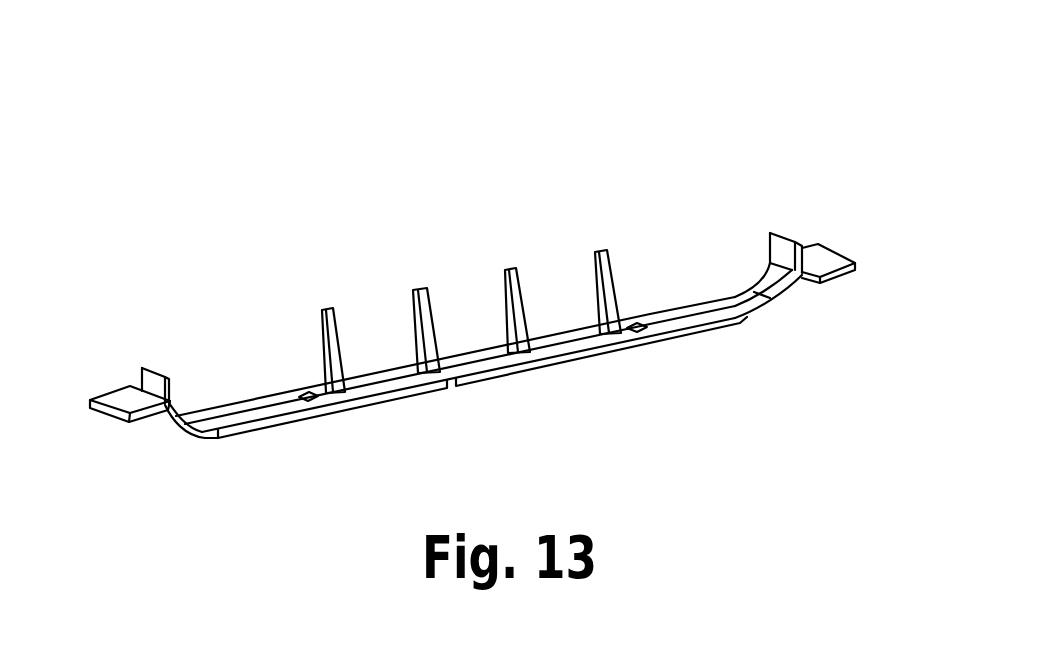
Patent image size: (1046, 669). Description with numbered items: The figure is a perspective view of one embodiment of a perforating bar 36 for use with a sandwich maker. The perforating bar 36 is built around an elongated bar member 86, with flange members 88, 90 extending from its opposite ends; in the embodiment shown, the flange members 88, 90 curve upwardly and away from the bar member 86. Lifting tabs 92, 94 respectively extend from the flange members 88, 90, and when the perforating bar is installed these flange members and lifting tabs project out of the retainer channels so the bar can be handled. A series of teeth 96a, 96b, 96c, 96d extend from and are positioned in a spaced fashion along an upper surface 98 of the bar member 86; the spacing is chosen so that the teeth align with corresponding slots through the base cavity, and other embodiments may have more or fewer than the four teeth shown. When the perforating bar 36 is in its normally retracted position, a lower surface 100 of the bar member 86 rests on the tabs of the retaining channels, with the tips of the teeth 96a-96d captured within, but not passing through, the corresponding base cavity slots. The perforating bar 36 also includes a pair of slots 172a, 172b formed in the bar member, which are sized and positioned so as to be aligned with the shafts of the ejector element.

The perforating bar 36 is at (695, 102).
The bar member 86 is at (420, 395).
The flange member 88 is at (195, 438).
The flange member 90 is at (796, 302).
The lifting tab 92 is at (118, 397).
The lifting tab 94 is at (826, 252).
The tooth 96a is at (325, 310).
The tooth 96b is at (418, 289).
The tooth 96c is at (508, 269).
The tooth 96d is at (602, 251).
The upper surface 98 is at (676, 303).
The lower surface 100 is at (343, 414).
The slot 172a is at (312, 394).
The slot 172b is at (652, 327).